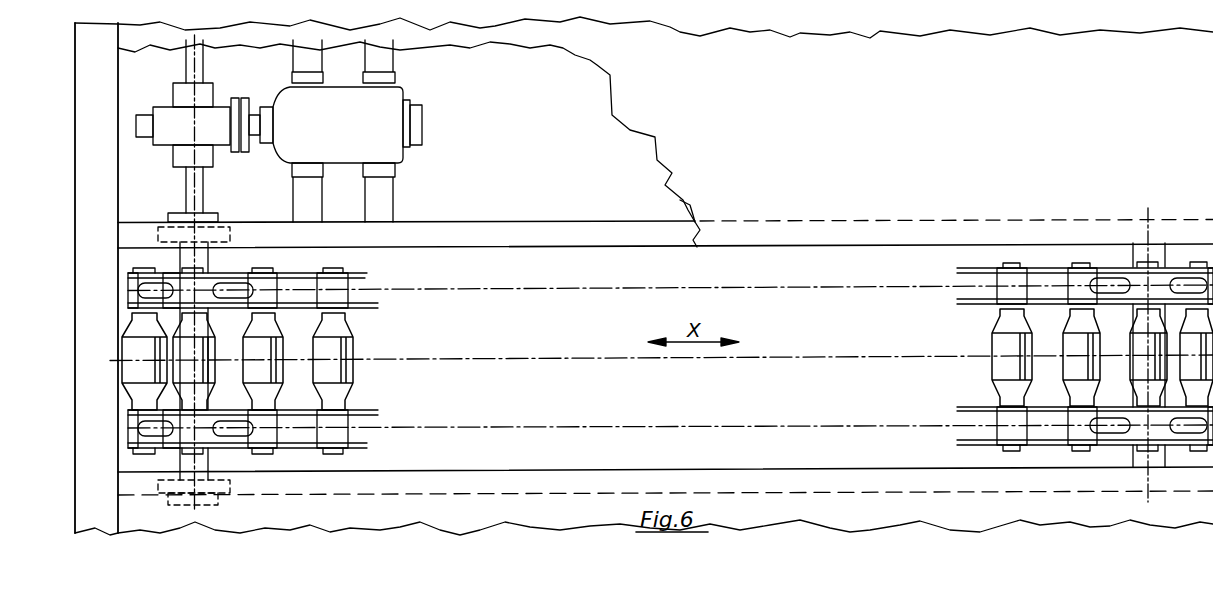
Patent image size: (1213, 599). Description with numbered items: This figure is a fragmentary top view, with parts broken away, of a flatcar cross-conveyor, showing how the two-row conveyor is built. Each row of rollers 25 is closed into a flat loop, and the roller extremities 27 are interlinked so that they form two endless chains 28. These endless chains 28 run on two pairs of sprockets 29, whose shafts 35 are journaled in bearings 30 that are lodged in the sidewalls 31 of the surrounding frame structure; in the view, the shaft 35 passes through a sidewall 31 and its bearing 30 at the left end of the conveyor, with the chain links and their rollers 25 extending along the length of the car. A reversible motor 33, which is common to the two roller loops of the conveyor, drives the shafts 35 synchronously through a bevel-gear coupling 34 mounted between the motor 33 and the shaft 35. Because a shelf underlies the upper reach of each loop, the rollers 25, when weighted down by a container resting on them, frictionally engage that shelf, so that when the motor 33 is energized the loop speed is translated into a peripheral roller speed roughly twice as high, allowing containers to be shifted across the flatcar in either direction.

The roller 25 is at (343, 375).
The roller extremity 27 is at (343, 315).
The endless chain 28 is at (297, 375).
The sprocket 29 is at (237, 428).
The bearing 30 is at (203, 262).
The sidewall 31 is at (552, 235).
The reversible motor 33 is at (302, 108).
The bevel-gear coupling 34 is at (213, 123).
The shaft 35 is at (186, 68).